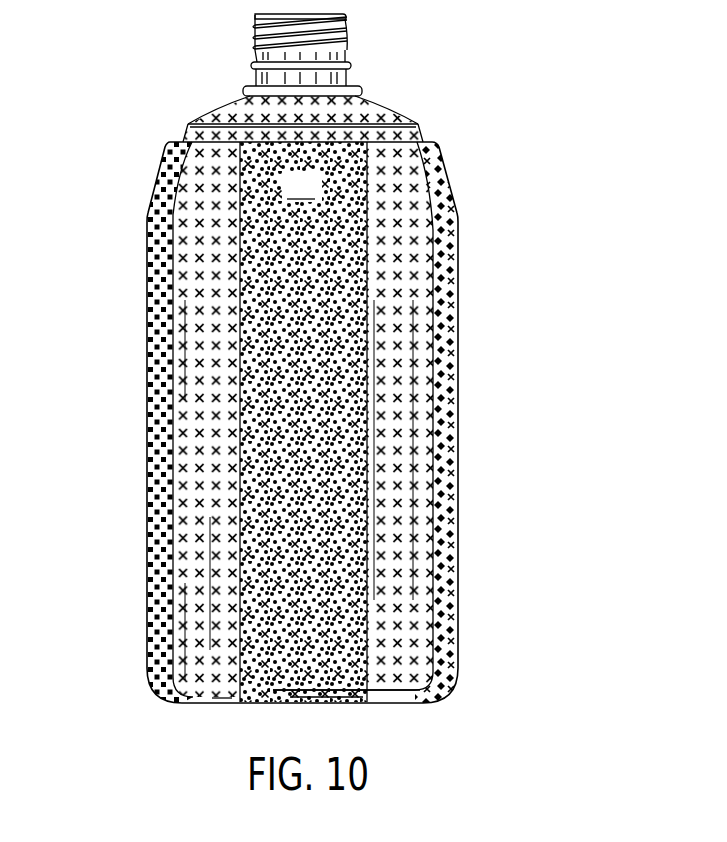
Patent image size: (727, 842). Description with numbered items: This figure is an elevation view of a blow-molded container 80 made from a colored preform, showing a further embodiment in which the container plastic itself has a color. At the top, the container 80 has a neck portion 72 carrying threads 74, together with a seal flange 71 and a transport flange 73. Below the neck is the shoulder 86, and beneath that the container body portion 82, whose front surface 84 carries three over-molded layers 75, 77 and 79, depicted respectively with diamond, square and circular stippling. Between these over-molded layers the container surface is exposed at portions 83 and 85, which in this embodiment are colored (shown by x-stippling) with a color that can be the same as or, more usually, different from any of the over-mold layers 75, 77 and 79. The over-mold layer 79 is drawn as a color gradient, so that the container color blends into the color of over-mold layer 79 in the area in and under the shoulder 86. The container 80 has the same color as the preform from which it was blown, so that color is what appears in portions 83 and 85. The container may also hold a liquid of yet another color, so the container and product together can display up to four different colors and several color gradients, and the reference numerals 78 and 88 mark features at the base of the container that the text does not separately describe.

The seal flange 71 is at (255, 68).
The neck portion 72 is at (353, 75).
The transport flange 73 is at (362, 90).
The threads 74 is at (353, 28).
The over-molded layer 75 is at (448, 397).
The over-molded layer 77 is at (147, 613).
The base 78 is at (355, 718).
The over-molded layer 79 is at (310, 571).
The container 80 is at (482, 203).
The container body portion 82 is at (458, 322).
The exposed surface portion 83 is at (408, 475).
The front surface 84 is at (287, 211).
The exposed surface portion 85 is at (200, 377).
The shoulder 86 is at (423, 129).
The heel 88 is at (210, 702).